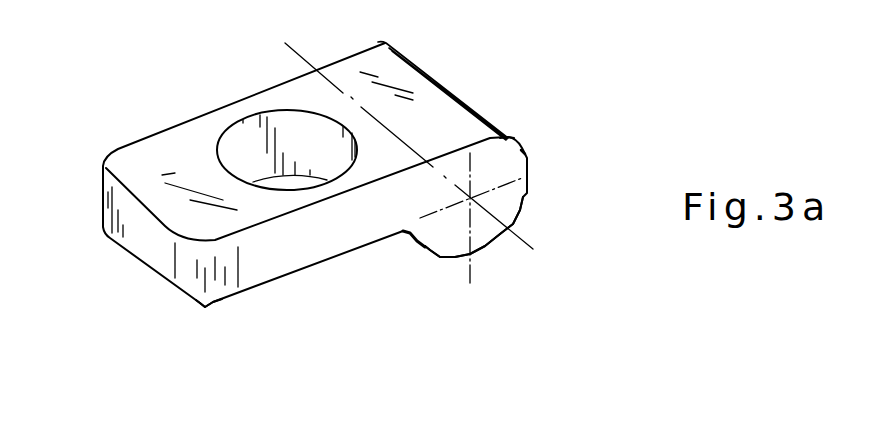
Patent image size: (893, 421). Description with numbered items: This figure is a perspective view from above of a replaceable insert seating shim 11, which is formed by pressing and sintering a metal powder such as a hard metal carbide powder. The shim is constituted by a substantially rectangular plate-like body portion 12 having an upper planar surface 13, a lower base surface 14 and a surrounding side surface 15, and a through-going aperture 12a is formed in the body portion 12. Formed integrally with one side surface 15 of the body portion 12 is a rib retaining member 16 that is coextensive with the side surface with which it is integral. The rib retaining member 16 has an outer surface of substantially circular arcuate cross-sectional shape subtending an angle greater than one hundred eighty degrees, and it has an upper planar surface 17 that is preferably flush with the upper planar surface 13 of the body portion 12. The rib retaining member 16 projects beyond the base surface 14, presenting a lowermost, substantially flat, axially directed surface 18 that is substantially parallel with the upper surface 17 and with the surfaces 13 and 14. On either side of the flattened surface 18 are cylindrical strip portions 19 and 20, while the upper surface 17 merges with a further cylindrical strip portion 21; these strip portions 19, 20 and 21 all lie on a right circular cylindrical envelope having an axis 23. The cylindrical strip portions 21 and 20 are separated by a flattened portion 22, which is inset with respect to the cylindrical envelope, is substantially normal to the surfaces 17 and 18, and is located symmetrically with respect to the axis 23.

The insert seating shim 11 is at (222, 88).
The body portion 12 is at (214, 314).
The through-going aperture 12a is at (297, 135).
The upper planar surface 13 is at (132, 165).
The lower base surface 14 is at (136, 268).
The side surface 15 is at (320, 240).
The rib retaining member 16 is at (538, 149).
The upper planar surface 17 is at (360, 67).
The lowermost flat axially directed surface 18 is at (483, 249).
The cylindrical strip portion 19 is at (441, 259).
The cylindrical strip portion 20 is at (522, 213).
The cylindrical strip portion 21 is at (510, 137).
The flattened portion 22 is at (529, 173).
The axis 23 is at (516, 233).